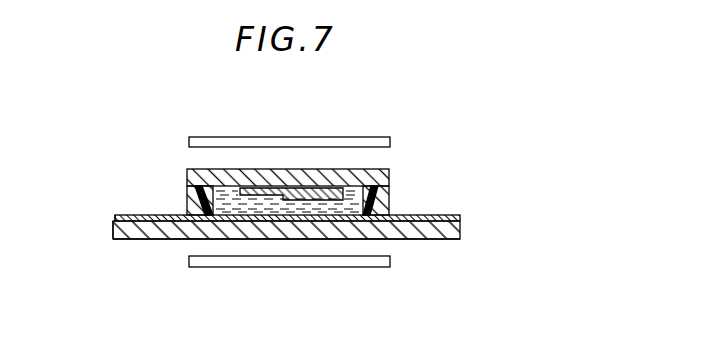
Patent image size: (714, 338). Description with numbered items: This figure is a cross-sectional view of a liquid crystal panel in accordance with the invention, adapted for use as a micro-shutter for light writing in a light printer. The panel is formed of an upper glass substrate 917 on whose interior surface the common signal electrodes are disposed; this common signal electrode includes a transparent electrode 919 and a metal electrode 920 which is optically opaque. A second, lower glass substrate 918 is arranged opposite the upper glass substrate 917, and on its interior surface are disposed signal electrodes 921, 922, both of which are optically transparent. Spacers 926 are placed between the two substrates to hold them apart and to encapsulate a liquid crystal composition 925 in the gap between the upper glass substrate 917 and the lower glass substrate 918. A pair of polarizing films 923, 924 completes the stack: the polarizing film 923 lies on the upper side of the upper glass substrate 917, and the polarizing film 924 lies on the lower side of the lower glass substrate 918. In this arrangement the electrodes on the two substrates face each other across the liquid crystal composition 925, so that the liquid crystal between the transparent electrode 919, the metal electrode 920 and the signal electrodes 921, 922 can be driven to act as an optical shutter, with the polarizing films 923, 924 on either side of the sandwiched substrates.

The upper glass substrate 917 is at (189, 172).
The lower glass substrate 918 is at (452, 243).
The transparent electrode 919 is at (327, 191).
The metal electrode 920 is at (377, 184).
The signal electrode 921 is at (457, 218).
The signal electrode 922 is at (118, 214).
The polarizing film 923 is at (218, 120).
The polarizing film 924 is at (212, 263).
The liquid crystal composition 925 is at (390, 214).
The spacers 926 is at (193, 197).